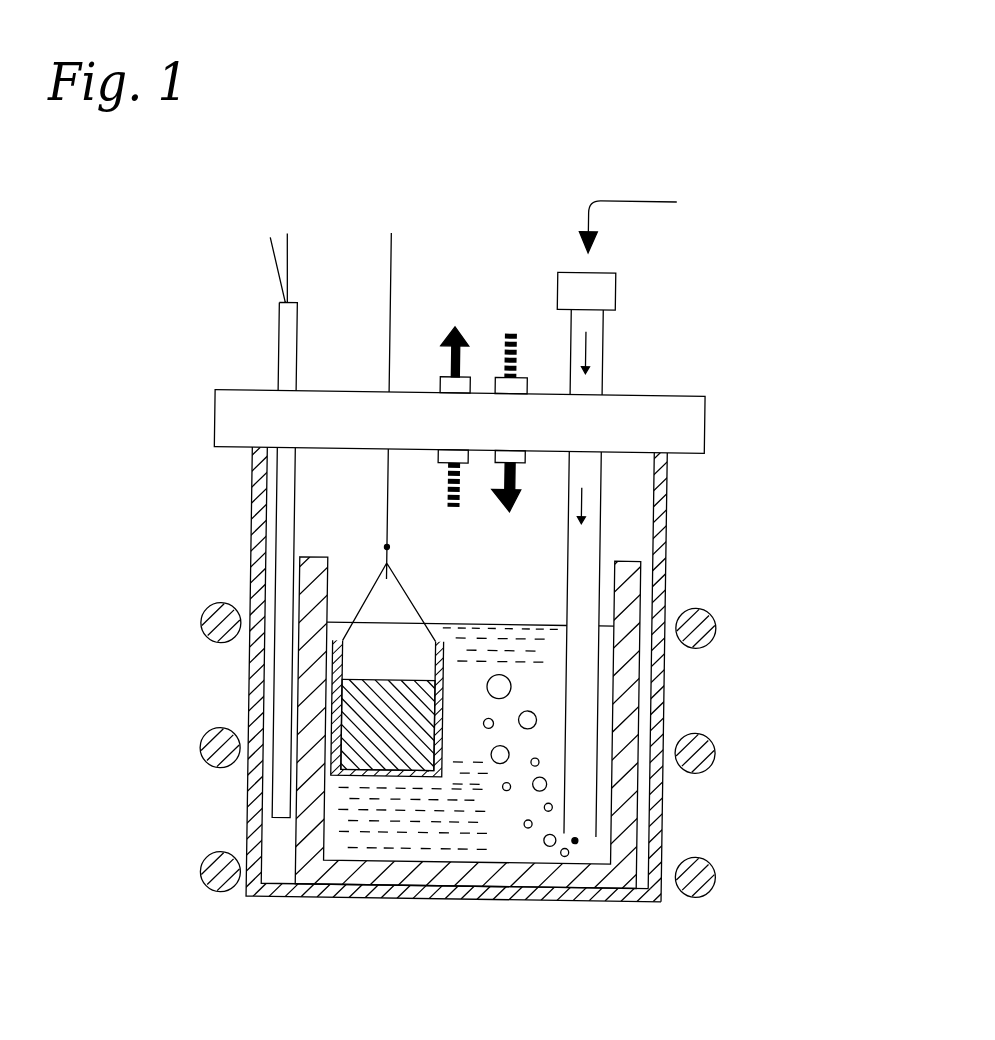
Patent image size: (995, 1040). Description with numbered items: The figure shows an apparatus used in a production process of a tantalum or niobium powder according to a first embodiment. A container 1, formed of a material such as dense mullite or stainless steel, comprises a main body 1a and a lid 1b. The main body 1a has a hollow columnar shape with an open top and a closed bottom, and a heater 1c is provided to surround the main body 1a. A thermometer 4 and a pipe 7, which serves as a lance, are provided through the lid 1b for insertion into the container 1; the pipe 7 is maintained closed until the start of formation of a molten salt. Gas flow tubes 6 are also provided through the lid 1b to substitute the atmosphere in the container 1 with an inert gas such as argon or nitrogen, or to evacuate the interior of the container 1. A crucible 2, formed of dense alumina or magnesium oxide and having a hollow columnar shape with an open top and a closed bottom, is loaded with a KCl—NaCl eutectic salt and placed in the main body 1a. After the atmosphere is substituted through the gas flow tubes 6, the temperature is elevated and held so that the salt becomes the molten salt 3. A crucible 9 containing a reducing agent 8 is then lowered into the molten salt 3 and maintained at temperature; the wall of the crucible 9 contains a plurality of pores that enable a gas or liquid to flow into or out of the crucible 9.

The container 1 is at (497, 674).
The main body 1a is at (667, 550).
The lid 1b is at (705, 420).
The heater 1c is at (718, 624).
The crucible 2 is at (620, 898).
The molten salt 3 is at (466, 820).
The thermometer 4 is at (282, 332).
The gas flow tubes 6 is at (500, 376).
The pipe 7 is at (613, 288).
The reducing agent 8 is at (355, 748).
The crucible 9 is at (351, 713).